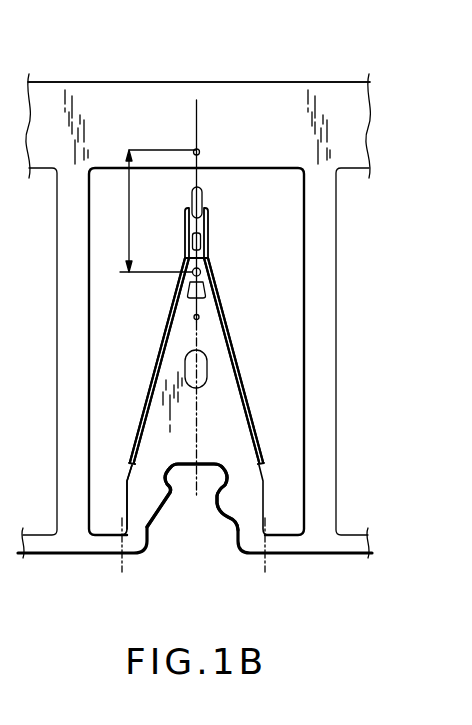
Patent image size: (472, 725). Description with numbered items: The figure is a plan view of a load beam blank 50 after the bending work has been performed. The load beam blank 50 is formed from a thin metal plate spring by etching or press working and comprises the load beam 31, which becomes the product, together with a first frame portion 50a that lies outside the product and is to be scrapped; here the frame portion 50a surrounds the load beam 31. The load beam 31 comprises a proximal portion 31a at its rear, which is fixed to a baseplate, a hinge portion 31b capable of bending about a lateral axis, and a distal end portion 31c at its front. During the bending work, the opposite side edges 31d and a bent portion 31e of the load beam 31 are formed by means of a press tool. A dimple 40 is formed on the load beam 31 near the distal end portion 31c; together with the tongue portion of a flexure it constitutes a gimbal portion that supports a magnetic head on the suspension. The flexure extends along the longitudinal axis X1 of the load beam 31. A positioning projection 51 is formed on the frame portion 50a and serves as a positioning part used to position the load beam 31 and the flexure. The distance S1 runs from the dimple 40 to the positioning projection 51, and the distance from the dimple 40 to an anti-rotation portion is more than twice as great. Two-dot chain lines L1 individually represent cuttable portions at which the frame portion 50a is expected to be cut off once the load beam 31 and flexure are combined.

The load beam blank 50 is at (283, 67).
The first frame portion 50a is at (120, 84).
The positioning projection 51 is at (200, 152).
The load beam 31 is at (178, 333).
The proximal portion 31a is at (153, 503).
The hinge portion 31b is at (129, 479).
The distal end portion 31c is at (204, 198).
The opposite side edges 31d is at (143, 409).
The bent portion 31e is at (203, 243).
The dimple 40 is at (201, 272).
The axis X1 is at (200, 329).
The distance S1 is at (148, 211).
The cuttable portions L1 is at (122, 566).